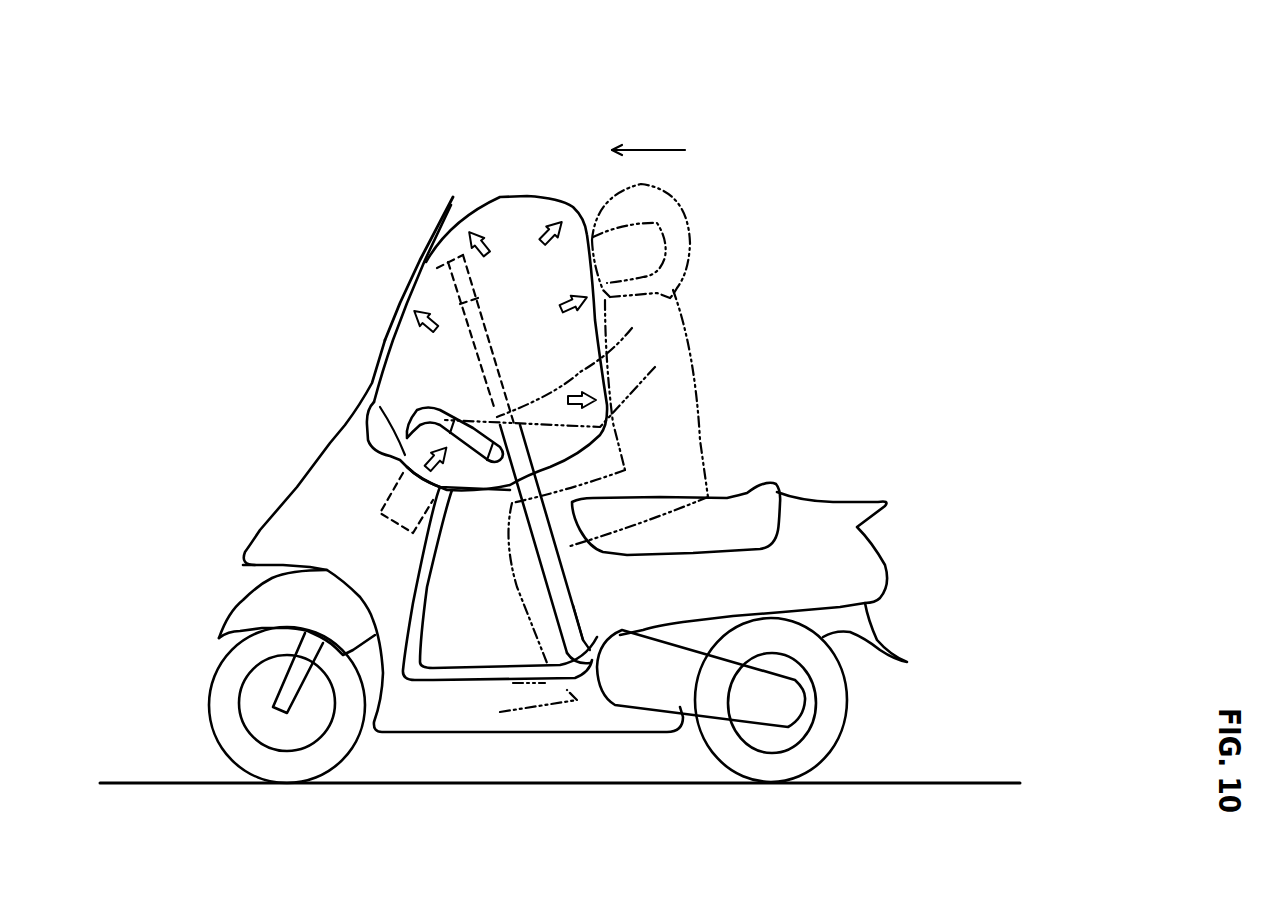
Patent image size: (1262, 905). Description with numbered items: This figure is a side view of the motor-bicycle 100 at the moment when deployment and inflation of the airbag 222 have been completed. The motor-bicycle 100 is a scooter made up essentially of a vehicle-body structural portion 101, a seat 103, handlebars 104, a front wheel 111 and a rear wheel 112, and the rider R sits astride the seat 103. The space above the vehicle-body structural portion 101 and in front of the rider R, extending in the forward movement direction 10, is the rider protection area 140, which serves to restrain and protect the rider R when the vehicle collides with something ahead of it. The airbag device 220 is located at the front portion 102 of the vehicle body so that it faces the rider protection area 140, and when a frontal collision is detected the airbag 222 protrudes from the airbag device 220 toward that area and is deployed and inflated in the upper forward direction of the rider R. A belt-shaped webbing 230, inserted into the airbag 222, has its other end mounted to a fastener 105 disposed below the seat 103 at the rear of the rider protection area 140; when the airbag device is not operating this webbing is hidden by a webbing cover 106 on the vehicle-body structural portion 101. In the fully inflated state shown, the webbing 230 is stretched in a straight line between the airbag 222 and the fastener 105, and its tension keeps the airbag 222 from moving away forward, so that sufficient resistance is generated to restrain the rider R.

The forward movement direction 10 is at (648, 123).
The motor-bicycle 100 is at (790, 320).
The vehicle-body structural portion 101 is at (617, 742).
The front portion of the vehicle body 102 is at (367, 477).
The seat 103 is at (777, 488).
The handlebars 104 is at (417, 400).
The fastener 105 is at (587, 653).
The webbing cover 106 is at (438, 670).
The front wheel 111 is at (300, 767).
The rear wheel 112 is at (763, 767).
The rider protection area 140 is at (490, 178).
The airbag device 220 is at (372, 493).
The airbag 222 is at (387, 306).
The webbing 230 is at (523, 478).
The rider R is at (680, 417).